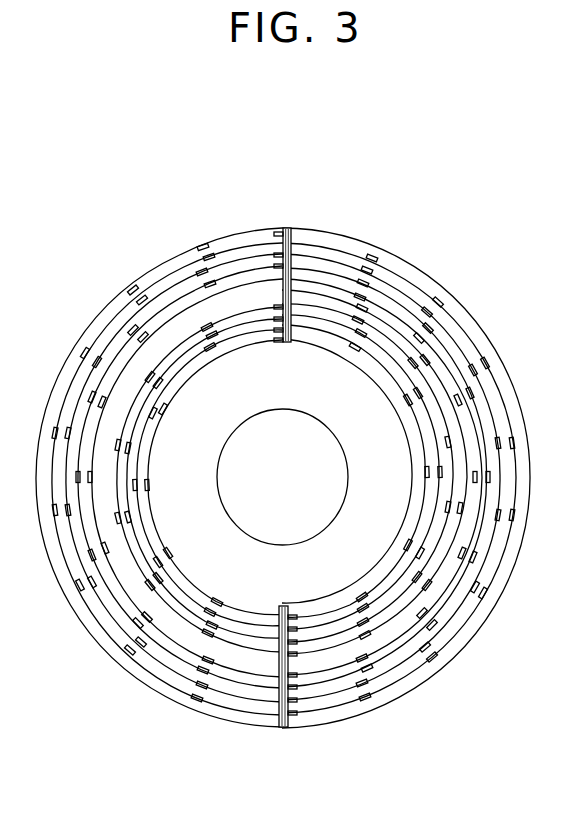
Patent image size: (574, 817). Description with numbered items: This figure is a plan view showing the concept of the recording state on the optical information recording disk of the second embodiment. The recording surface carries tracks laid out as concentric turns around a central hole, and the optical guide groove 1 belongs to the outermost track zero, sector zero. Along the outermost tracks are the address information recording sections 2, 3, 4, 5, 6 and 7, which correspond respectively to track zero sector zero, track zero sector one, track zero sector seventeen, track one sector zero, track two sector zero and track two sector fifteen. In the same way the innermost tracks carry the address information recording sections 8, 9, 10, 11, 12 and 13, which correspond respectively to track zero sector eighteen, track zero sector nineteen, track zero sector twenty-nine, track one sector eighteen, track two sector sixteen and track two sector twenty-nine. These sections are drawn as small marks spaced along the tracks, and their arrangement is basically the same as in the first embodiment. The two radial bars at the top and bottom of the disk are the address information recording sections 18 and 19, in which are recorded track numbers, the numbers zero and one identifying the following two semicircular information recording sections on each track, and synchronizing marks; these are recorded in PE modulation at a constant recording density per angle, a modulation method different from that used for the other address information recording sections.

The optical guide groove 1 is at (216, 231).
The address information recording section 2 is at (287, 228).
The address information recording section 3 is at (199, 245).
The address information recording section 4 is at (370, 257).
The address information recording section 5 is at (278, 232).
The address information recording section 6 is at (277, 253).
The address information recording section 7 is at (364, 283).
The address information recording section 8 is at (273, 340).
The address information recording section 9 is at (212, 360).
The address information recording section 10 is at (357, 346).
The address information recording section 11 is at (273, 330).
The address information recording section 12 is at (275, 305).
The address information recording section 13 is at (360, 320).
The address information recording section 18 is at (292, 229).
The address information recording section 19 is at (282, 728).